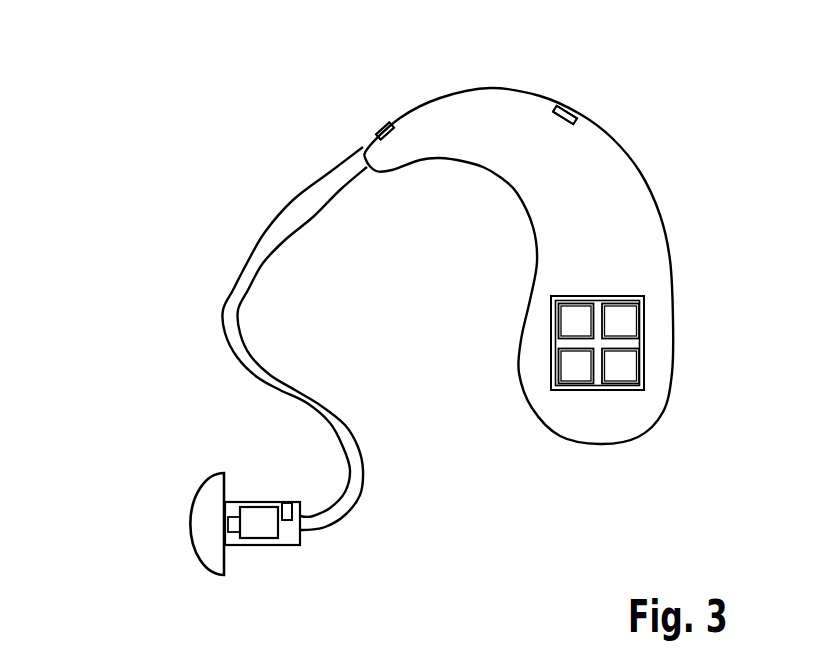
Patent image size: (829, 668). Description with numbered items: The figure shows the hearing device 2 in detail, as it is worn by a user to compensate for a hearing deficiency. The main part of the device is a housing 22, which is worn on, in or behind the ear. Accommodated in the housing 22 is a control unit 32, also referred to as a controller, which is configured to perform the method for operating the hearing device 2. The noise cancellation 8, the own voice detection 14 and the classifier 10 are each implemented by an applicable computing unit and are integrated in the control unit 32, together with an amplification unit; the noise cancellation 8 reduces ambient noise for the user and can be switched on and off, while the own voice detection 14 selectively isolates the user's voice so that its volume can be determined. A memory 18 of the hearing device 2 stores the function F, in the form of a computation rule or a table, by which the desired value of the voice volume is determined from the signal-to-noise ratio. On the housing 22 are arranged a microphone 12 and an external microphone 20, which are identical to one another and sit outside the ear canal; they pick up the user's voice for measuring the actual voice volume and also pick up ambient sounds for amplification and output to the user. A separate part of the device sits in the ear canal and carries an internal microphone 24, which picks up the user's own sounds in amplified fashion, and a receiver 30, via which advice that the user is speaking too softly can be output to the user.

The hearing device 2 is at (170, 211).
The noise cancellation 8 is at (551, 322).
The classifier 10 is at (644, 363).
The microphone 12 is at (380, 125).
The own voice detection 14 is at (644, 322).
The memory 18 is at (551, 363).
The external microphone 20 is at (471, 87).
The housing 22 is at (490, 88).
The internal microphone 24 is at (296, 473).
The receiver 30 is at (258, 540).
The control unit 32 is at (644, 333).